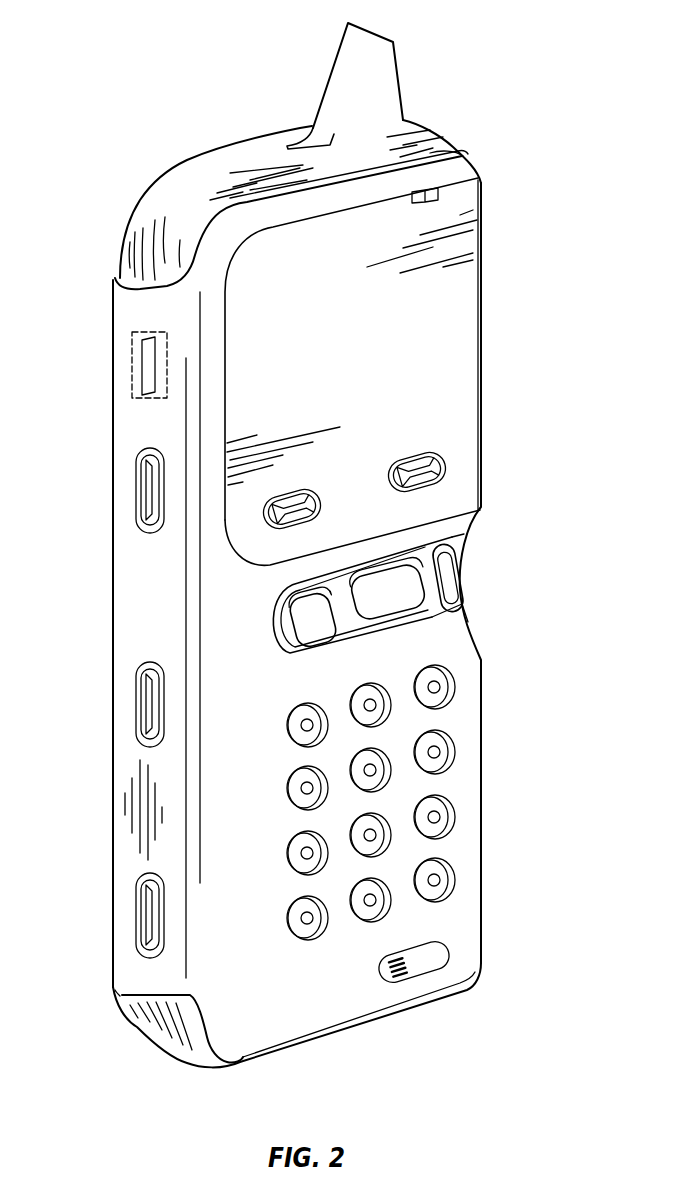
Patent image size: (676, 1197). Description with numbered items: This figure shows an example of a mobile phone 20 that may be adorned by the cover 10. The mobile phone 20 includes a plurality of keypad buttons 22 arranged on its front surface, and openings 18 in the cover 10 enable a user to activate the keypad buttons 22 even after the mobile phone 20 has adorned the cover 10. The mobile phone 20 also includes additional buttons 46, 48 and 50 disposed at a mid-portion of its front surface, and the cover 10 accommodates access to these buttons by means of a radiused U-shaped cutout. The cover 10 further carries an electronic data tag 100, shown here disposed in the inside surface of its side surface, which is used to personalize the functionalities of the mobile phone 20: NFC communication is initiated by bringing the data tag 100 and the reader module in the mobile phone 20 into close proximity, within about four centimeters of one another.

The cover 10 is at (122, 583).
The openings 18 is at (453, 757).
The mobile phone 20 is at (438, 140).
The keypad buttons 22 is at (440, 752).
The button 46 is at (448, 562).
The button 48 is at (402, 588).
The button 50 is at (308, 608).
The electronic data tag 100 is at (142, 363).